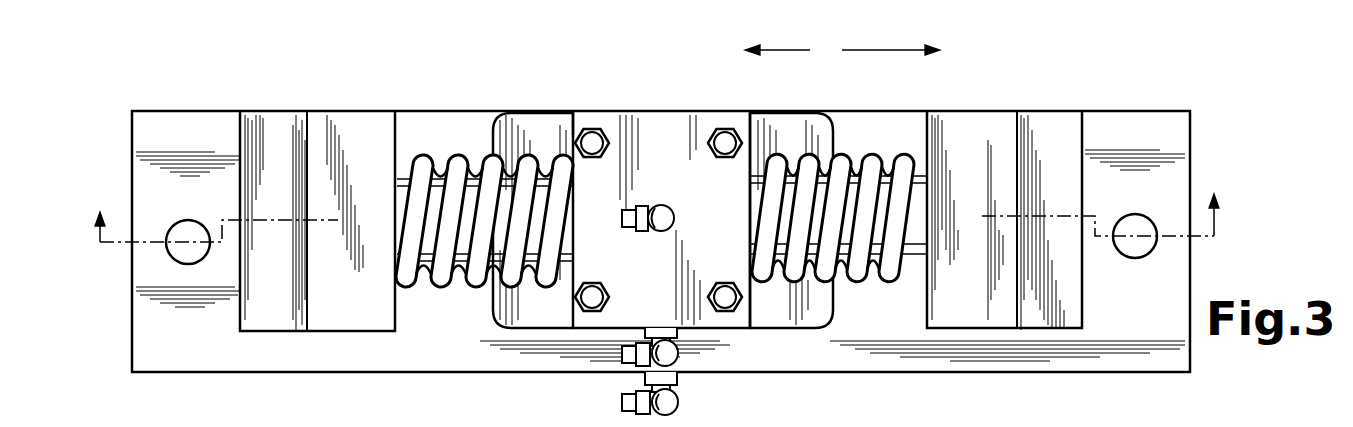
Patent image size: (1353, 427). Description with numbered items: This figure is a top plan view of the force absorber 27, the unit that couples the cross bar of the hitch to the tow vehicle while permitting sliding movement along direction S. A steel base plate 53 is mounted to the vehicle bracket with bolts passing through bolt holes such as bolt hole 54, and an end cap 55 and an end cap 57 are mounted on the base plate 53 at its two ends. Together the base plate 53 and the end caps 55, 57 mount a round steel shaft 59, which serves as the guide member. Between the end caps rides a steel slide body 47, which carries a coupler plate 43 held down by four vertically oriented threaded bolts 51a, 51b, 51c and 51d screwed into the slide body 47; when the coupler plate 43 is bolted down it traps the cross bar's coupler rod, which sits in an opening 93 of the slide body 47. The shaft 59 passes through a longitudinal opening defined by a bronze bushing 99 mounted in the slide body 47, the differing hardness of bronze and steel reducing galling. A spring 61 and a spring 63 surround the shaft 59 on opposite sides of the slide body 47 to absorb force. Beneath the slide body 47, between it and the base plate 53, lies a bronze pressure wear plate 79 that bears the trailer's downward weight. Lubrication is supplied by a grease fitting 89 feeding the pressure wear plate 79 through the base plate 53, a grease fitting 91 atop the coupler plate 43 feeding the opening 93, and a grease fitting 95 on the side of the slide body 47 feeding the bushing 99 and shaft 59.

The force absorber 27 is at (980, 76).
The coupler plate 43 is at (653, 149).
The slide body 47 is at (560, 135).
The threaded bolt 51a is at (596, 312).
The threaded bolt 51b is at (606, 128).
The threaded bolt 51c is at (727, 312).
The threaded bolt 51d is at (722, 128).
The base plate 53 is at (419, 344).
The bolt hole 54 is at (1145, 212).
The end cap 55 is at (295, 116).
The end cap 57 is at (1068, 112).
The shaft 59 is at (422, 162).
The spring 61 is at (845, 140).
The spring 63 is at (478, 300).
The pressure wear plate 79 is at (812, 338).
The grease fitting 89 is at (678, 406).
The grease fitting 91 is at (672, 210).
The opening 93 is at (645, 62).
The grease fitting 95 is at (676, 360).
The bushing 99 is at (768, 150).